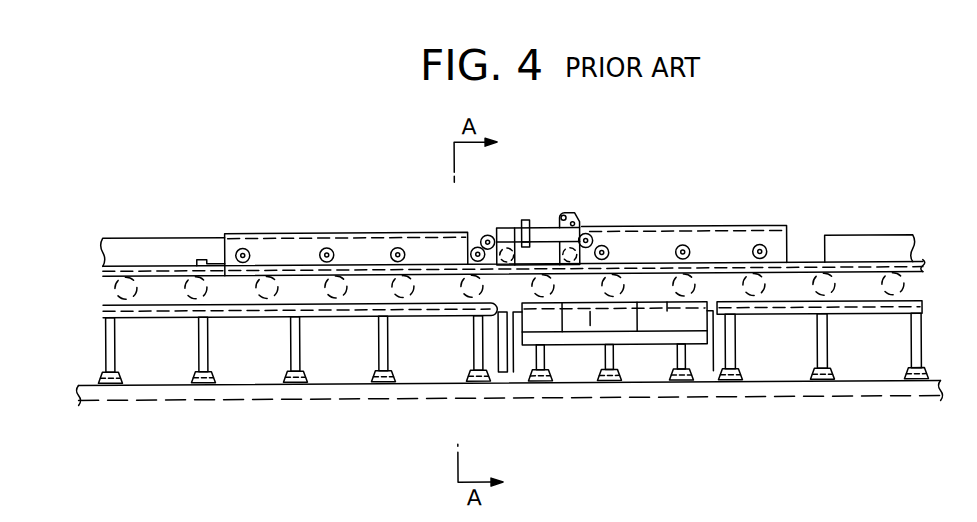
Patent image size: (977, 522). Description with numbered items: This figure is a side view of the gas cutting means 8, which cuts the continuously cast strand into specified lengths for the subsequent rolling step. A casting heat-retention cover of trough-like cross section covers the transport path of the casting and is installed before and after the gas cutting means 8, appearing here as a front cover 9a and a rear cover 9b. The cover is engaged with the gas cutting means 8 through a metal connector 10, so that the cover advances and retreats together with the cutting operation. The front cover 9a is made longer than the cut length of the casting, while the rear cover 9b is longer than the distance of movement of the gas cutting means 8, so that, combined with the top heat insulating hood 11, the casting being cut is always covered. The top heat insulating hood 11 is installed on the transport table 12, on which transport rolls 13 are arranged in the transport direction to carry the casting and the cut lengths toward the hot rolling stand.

The gas cutting means 8 is at (539, 212).
The front cover 9a is at (715, 227).
The rear cover 9b is at (285, 231).
The metal connector 10 is at (487, 233).
The top heat insulating hood 11 is at (148, 236).
The transport table 12 is at (882, 316).
The transport rolls 13 is at (904, 285).